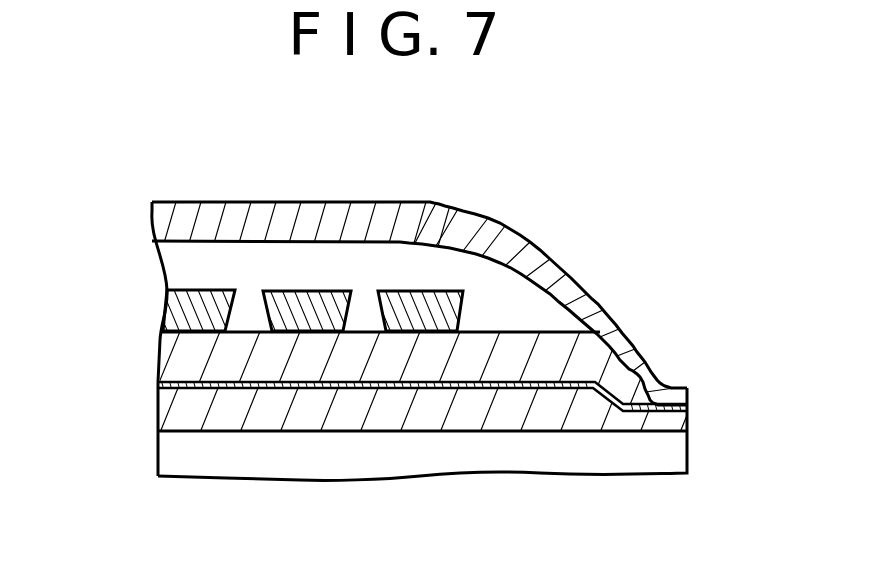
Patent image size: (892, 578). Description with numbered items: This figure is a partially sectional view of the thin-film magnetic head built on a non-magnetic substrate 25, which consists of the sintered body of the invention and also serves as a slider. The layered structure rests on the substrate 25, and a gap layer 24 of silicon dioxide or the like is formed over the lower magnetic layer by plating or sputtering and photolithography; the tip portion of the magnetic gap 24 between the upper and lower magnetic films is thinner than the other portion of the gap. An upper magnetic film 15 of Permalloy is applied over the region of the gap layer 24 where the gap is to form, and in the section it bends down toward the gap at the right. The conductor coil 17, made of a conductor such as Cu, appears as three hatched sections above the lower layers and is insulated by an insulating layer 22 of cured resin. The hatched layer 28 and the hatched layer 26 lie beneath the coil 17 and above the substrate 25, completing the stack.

The upper magnetic film 15 is at (421, 203).
The insulating layer 22 is at (157, 262).
The conductor coil 17 is at (164, 311).
The hatched layer 28 is at (162, 357).
The magnetic gap 24 is at (159, 388).
The hatched base layer 26 is at (411, 424).
The non-magnetic substrate 25 is at (687, 448).